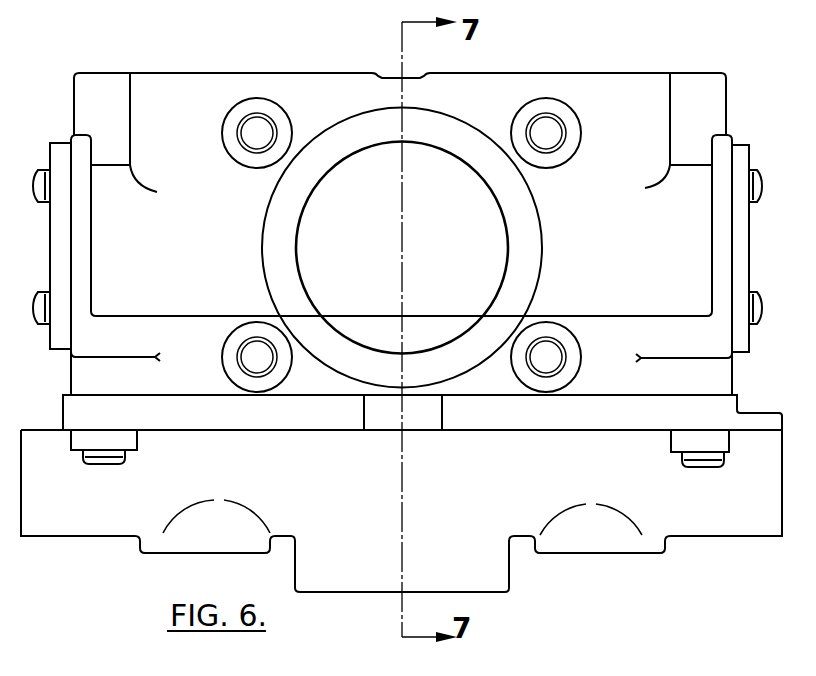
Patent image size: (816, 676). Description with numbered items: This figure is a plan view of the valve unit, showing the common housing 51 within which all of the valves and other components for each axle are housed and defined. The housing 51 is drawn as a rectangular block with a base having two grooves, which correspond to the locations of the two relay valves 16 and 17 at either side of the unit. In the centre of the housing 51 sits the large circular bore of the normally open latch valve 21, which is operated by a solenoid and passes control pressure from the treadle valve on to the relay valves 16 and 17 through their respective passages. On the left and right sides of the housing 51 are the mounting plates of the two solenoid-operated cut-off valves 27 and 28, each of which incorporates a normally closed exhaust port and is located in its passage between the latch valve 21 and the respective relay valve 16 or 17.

The relay valve 16 is at (205, 522).
The relay valve 17 is at (593, 525).
The latch valve 21 is at (387, 247).
The solenoid-operated cut-off valve 27 is at (60, 173).
The solenoid-operated cut-off valve 28 is at (741, 173).
The common housing 51 is at (338, 152).